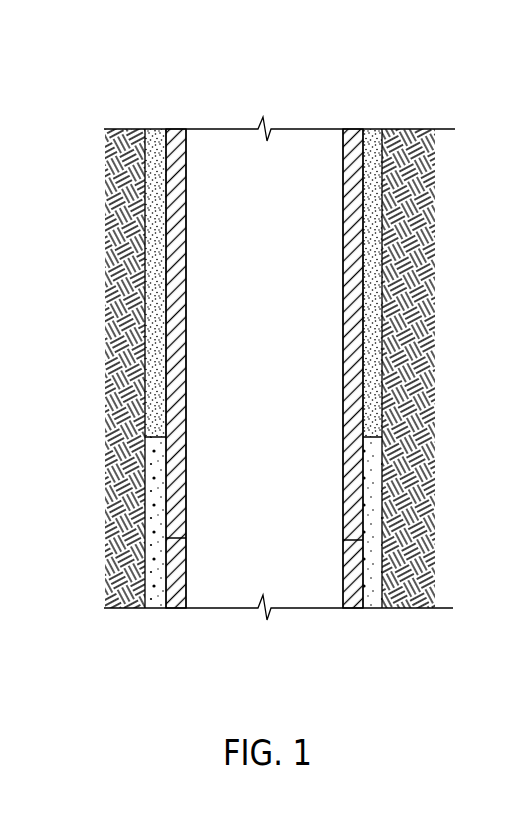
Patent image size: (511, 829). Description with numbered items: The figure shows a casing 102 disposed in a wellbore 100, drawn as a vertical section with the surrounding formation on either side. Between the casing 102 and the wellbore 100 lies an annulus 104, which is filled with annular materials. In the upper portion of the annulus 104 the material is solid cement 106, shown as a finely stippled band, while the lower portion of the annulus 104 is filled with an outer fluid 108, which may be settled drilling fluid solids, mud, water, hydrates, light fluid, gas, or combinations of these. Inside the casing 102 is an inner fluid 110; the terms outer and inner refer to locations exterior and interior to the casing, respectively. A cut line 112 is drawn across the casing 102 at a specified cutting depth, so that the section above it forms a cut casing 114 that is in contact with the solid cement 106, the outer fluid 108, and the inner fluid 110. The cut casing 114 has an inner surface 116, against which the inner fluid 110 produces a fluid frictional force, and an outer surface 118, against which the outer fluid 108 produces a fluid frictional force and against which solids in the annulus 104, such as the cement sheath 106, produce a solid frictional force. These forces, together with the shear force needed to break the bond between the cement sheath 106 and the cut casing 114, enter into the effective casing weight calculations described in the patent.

The wellbore 100 is at (411, 142).
The casing 102 is at (175, 610).
The annulus 104 is at (372, 111).
The solid cement 106 is at (372, 597).
The outer fluid 108 is at (150, 300).
The inner fluid 110 is at (285, 322).
The cut line 112 is at (186, 538).
The cut casing 114 is at (176, 129).
The inner surface 116 is at (158, 190).
The outer surface 118 is at (186, 248).